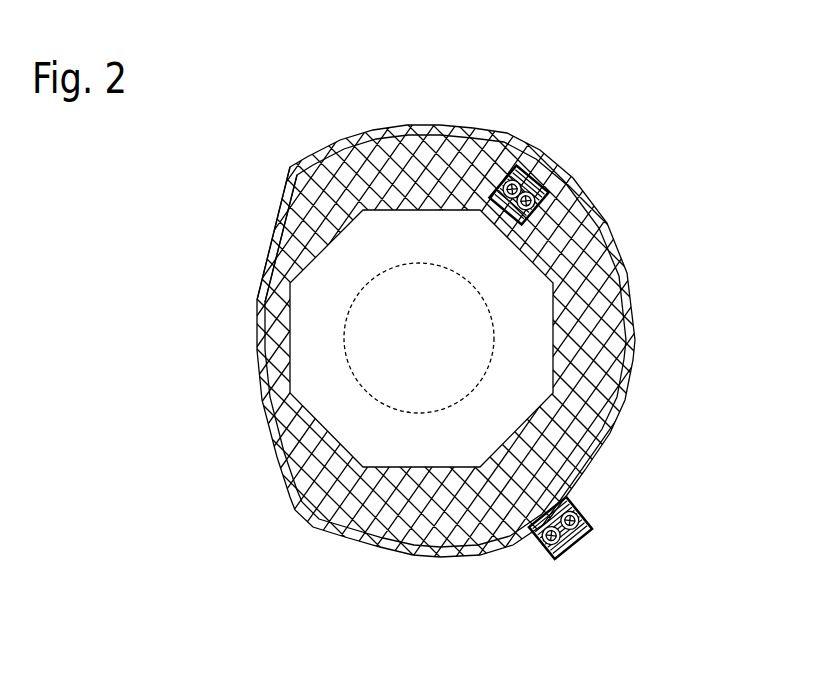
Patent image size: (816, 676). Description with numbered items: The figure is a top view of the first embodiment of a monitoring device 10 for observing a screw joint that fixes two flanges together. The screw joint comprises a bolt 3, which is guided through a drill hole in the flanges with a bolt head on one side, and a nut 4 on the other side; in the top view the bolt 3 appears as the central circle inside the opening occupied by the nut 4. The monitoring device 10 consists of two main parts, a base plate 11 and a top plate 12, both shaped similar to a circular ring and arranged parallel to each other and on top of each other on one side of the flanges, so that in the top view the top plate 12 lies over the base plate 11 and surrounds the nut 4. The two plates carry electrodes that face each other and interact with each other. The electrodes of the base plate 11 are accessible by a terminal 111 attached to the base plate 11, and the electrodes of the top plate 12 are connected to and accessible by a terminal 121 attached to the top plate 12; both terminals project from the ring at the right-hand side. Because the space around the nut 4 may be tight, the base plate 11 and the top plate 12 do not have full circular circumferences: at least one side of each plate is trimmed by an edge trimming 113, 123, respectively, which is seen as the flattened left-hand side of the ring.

The monitoring device 10 is at (459, 106).
The base plate 11 is at (597, 448).
The top plate 12 is at (592, 375).
The edge trimming 113 is at (263, 184).
The edge trimming 123 is at (281, 238).
The terminal 121 is at (523, 162).
The terminal 111 is at (583, 543).
The bolt 3 is at (385, 373).
The nut 4 is at (435, 442).